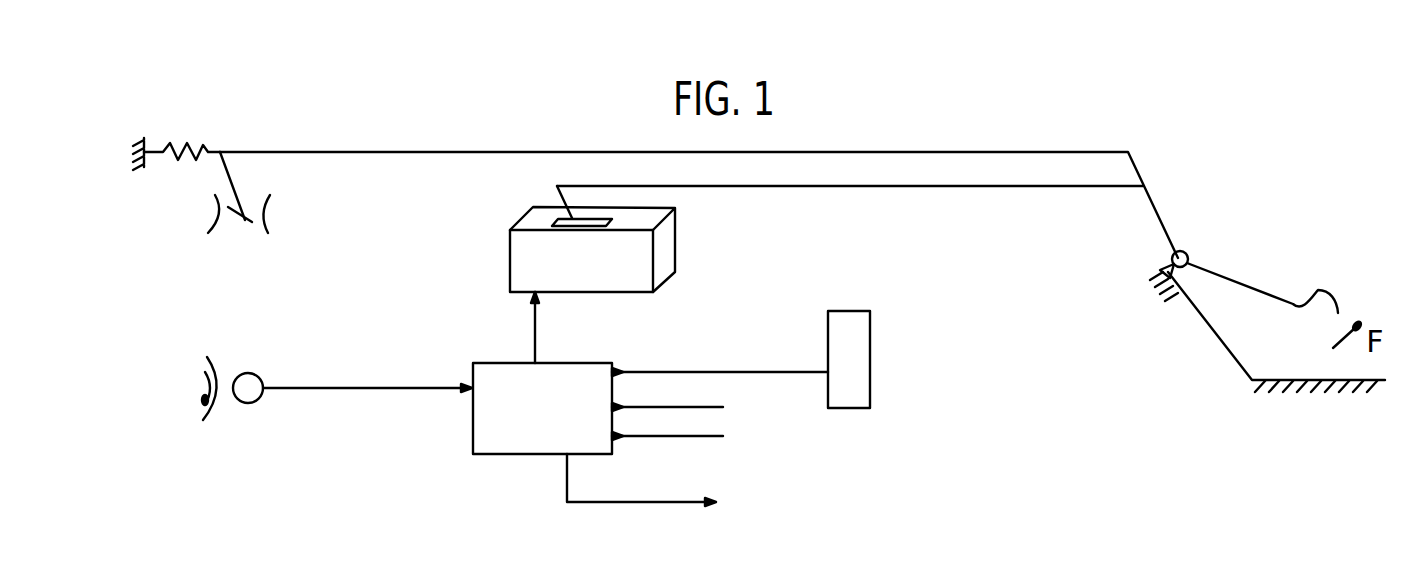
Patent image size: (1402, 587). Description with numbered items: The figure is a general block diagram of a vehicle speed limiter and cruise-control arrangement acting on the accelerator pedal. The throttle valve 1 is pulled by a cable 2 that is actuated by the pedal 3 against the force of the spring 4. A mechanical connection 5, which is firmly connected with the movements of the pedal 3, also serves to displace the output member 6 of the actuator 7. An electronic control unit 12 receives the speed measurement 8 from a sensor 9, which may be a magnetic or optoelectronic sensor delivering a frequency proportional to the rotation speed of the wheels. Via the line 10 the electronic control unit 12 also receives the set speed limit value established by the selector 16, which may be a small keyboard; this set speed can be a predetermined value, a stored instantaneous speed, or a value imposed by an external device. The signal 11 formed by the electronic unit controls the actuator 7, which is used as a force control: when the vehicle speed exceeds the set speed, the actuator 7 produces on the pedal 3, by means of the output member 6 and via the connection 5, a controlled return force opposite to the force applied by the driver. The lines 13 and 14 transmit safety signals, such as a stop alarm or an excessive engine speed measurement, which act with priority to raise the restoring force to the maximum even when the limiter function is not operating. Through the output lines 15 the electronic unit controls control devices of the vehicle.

The throttle valve 1 is at (238, 225).
The cable 2 is at (548, 152).
The pedal 3 is at (1247, 283).
The spring 4 is at (199, 114).
The mechanical connection 5 is at (990, 186).
The output member 6 is at (557, 195).
The actuator 7 is at (510, 255).
The speed measurement 8 is at (445, 385).
The sensor 9 is at (262, 380).
The line 10 is at (717, 372).
The signal 11 is at (535, 318).
The electronic control unit 12 is at (497, 455).
The line 13 is at (715, 407).
The line 14 is at (715, 436).
The output lines 15 is at (690, 503).
The selector 16 is at (870, 378).